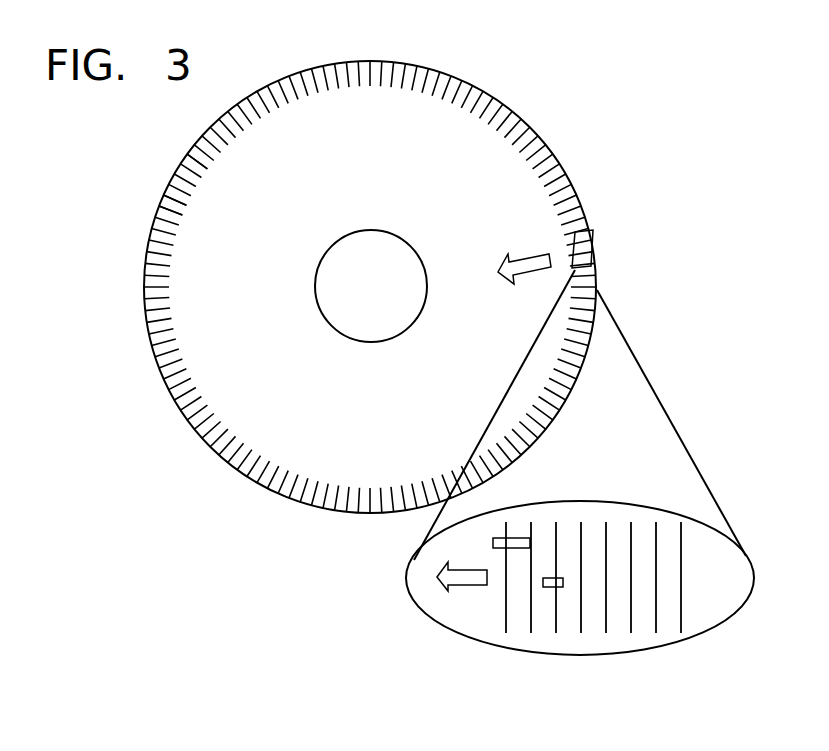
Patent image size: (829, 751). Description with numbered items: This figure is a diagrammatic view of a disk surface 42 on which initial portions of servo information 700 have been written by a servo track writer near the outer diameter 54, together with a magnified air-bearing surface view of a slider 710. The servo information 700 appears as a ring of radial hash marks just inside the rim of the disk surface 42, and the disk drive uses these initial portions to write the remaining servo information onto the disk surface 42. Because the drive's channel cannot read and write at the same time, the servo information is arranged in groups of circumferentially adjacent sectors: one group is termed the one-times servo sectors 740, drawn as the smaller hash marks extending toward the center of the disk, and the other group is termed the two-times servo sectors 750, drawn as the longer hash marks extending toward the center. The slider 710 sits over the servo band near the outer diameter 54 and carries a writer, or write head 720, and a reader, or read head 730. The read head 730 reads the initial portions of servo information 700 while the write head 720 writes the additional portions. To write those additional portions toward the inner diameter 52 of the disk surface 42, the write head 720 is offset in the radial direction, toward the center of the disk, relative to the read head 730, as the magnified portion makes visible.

The disk surface 42 is at (386, 398).
The outer diameter 54 is at (510, 104).
The inner diameter 52 is at (387, 232).
The servo information 700 is at (182, 205).
The 1x servo sectors 740 is at (190, 158).
The 2x servo sectors 750 is at (159, 208).
The slider 710 is at (592, 258).
The write head 720 is at (530, 546).
The read head 730 is at (560, 588).